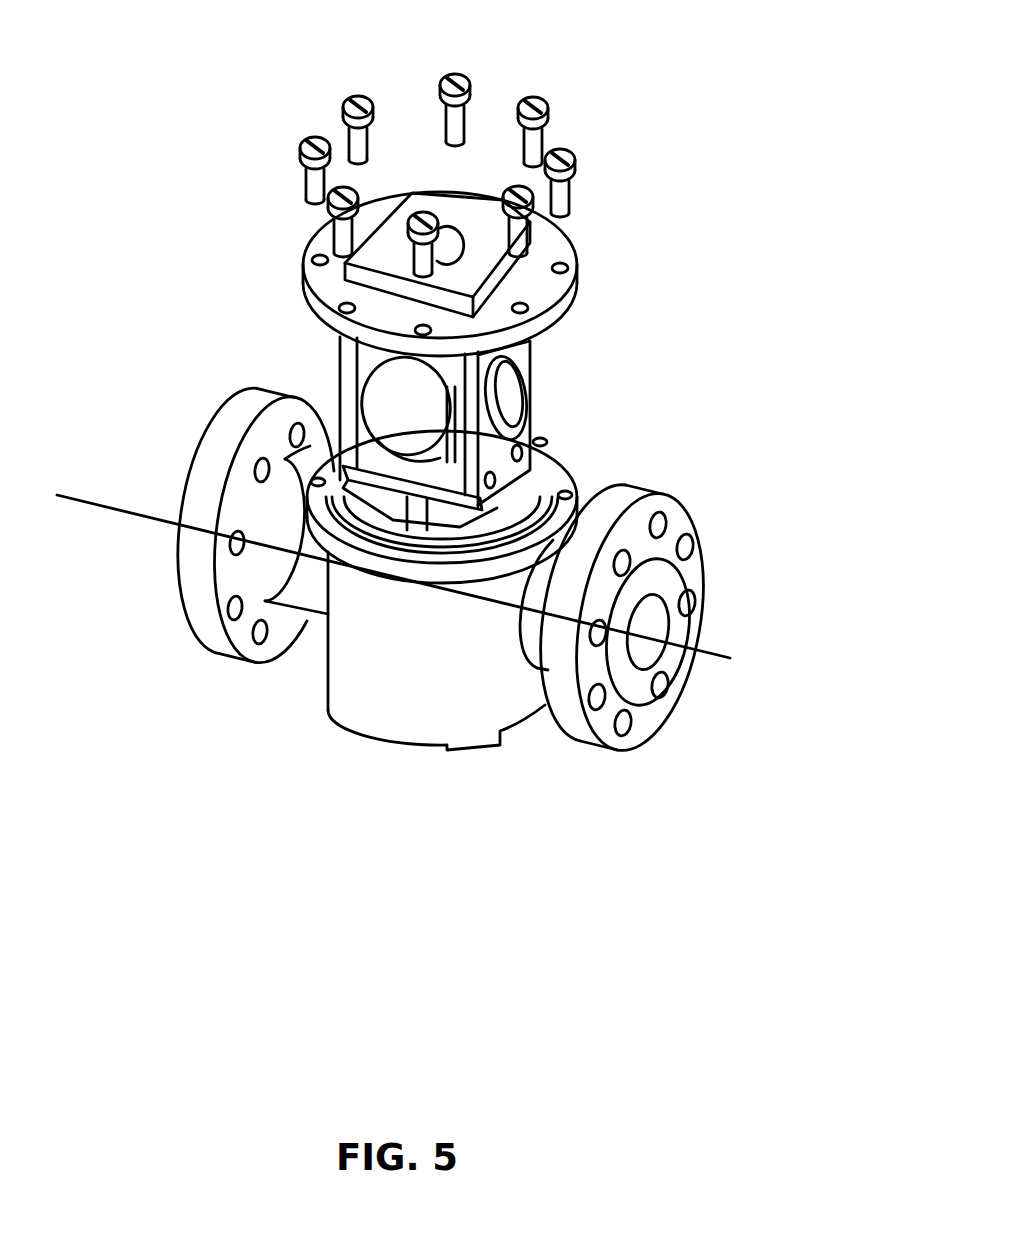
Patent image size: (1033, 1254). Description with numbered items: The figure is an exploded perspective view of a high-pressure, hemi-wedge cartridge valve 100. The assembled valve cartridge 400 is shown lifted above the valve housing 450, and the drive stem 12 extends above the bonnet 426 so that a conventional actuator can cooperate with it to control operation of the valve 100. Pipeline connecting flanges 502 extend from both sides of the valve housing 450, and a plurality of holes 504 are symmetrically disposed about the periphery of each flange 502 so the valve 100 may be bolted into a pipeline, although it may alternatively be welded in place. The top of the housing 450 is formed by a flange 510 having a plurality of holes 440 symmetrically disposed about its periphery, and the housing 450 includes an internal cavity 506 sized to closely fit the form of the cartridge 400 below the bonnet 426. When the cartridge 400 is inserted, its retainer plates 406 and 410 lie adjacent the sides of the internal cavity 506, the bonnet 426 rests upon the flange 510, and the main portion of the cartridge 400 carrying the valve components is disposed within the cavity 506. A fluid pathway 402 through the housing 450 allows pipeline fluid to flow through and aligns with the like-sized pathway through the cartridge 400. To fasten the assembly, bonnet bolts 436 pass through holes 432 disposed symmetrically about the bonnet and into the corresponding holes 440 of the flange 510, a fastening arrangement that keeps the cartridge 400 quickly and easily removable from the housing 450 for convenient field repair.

The drive stem 12 is at (447, 188).
The valve 100 is at (295, 792).
The valve cartridge 400 is at (282, 328).
The fluid pathway 402 is at (740, 663).
The retainer plate 406 is at (532, 405).
The retainer plate 410 is at (337, 380).
The bonnet 426 is at (577, 287).
The holes 432 is at (313, 242).
The bonnet bolts 436 is at (577, 165).
The holes 440 is at (583, 478).
The valve housing 450 is at (505, 722).
The pipeline connecting flanges 502 is at (250, 570).
The holes 504 is at (250, 465).
The internal cavity 506 is at (553, 463).
The flange 510 is at (530, 450).